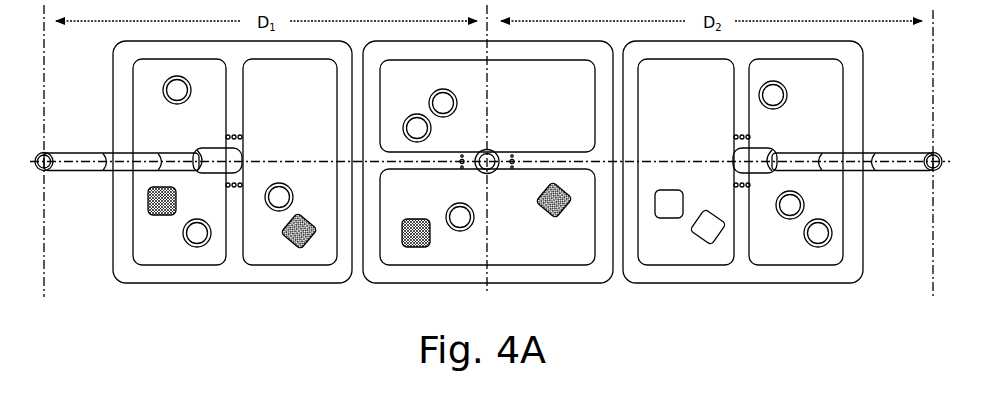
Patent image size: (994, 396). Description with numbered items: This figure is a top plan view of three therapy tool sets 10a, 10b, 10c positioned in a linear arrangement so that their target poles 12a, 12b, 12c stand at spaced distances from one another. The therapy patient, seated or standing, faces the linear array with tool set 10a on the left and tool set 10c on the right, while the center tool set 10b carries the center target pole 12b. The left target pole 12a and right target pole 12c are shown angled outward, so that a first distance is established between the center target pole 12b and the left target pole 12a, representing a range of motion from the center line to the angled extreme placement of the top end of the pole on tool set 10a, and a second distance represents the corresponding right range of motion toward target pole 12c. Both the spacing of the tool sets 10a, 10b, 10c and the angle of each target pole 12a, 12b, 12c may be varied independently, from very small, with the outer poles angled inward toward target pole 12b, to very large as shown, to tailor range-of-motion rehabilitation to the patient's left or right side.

The therapy tool set 10a is at (184, 291).
The therapy tool set 10b is at (573, 288).
The therapy tool set 10c is at (827, 288).
The target pole 12a is at (179, 149).
The target pole 12b is at (491, 150).
The target pole 12c is at (794, 150).